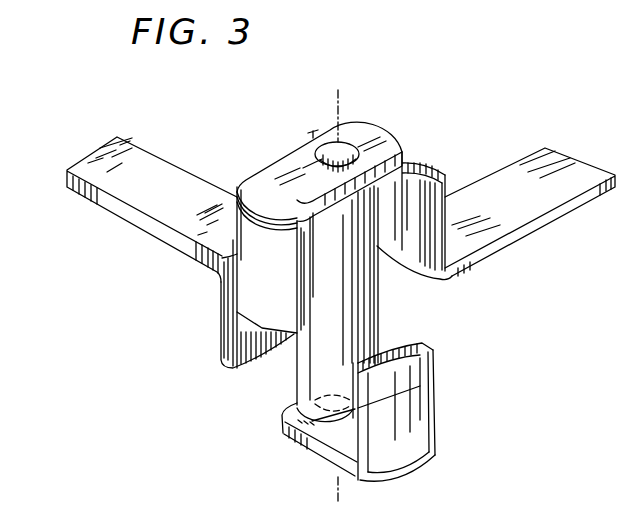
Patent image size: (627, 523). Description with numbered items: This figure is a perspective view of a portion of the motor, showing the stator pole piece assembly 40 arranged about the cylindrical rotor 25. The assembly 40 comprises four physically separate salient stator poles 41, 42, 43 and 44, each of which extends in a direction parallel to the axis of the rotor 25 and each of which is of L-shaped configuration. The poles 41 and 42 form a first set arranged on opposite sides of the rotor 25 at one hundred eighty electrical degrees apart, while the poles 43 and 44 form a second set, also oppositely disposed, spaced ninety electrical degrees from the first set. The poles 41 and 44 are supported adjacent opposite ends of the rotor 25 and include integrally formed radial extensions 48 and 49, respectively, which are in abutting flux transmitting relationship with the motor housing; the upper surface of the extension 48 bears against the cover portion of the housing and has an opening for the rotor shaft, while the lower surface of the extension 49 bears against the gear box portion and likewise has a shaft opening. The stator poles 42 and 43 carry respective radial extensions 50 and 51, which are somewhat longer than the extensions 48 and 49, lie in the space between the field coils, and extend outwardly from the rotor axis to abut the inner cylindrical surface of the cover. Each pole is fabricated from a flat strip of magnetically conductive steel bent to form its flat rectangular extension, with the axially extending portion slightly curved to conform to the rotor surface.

The stator pole piece assembly 40 is at (590, 122).
The rotor 25 is at (380, 315).
The salient stator pole 41 is at (237, 332).
The salient stator pole 42 is at (436, 170).
The salient stator pole 43 is at (235, 369).
The salient stator pole 44 is at (435, 368).
The radial extension 48 is at (318, 134).
The radial extension 49 is at (287, 424).
The radial extension 50 is at (535, 233).
The radial extension 51 is at (135, 218).